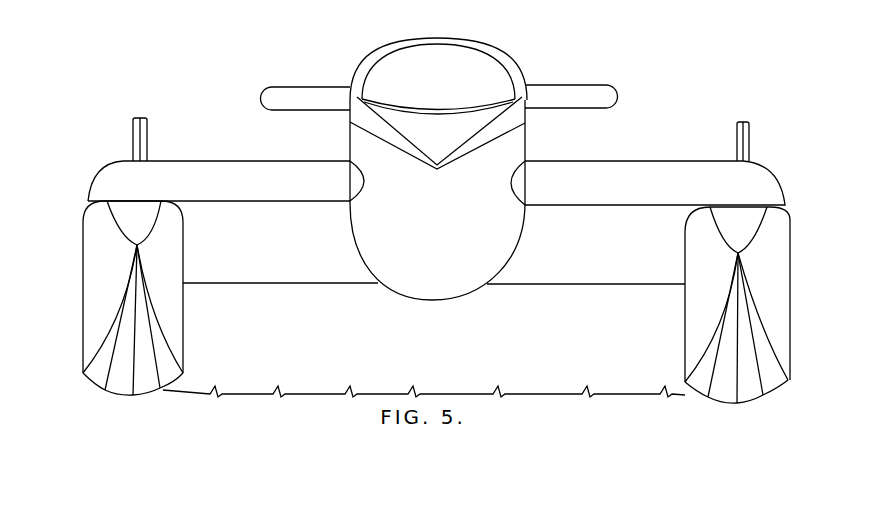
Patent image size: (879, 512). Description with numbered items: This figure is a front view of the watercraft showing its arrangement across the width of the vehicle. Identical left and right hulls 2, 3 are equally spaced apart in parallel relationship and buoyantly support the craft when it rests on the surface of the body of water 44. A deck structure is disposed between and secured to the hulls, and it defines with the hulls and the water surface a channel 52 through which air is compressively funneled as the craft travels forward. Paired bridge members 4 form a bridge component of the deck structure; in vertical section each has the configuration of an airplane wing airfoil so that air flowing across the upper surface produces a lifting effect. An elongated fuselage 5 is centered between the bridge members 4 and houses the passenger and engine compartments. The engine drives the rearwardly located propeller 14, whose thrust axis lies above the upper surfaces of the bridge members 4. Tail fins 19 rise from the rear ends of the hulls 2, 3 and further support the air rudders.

The left hull 2 is at (787, 302).
The right hull 3 is at (88, 315).
The bridge members 4 is at (240, 185).
The fuselage 5 is at (441, 247).
The propeller 14 is at (568, 84).
The tail fins 19 is at (137, 130).
The body of water 44 is at (630, 398).
The channel 52 is at (373, 363).